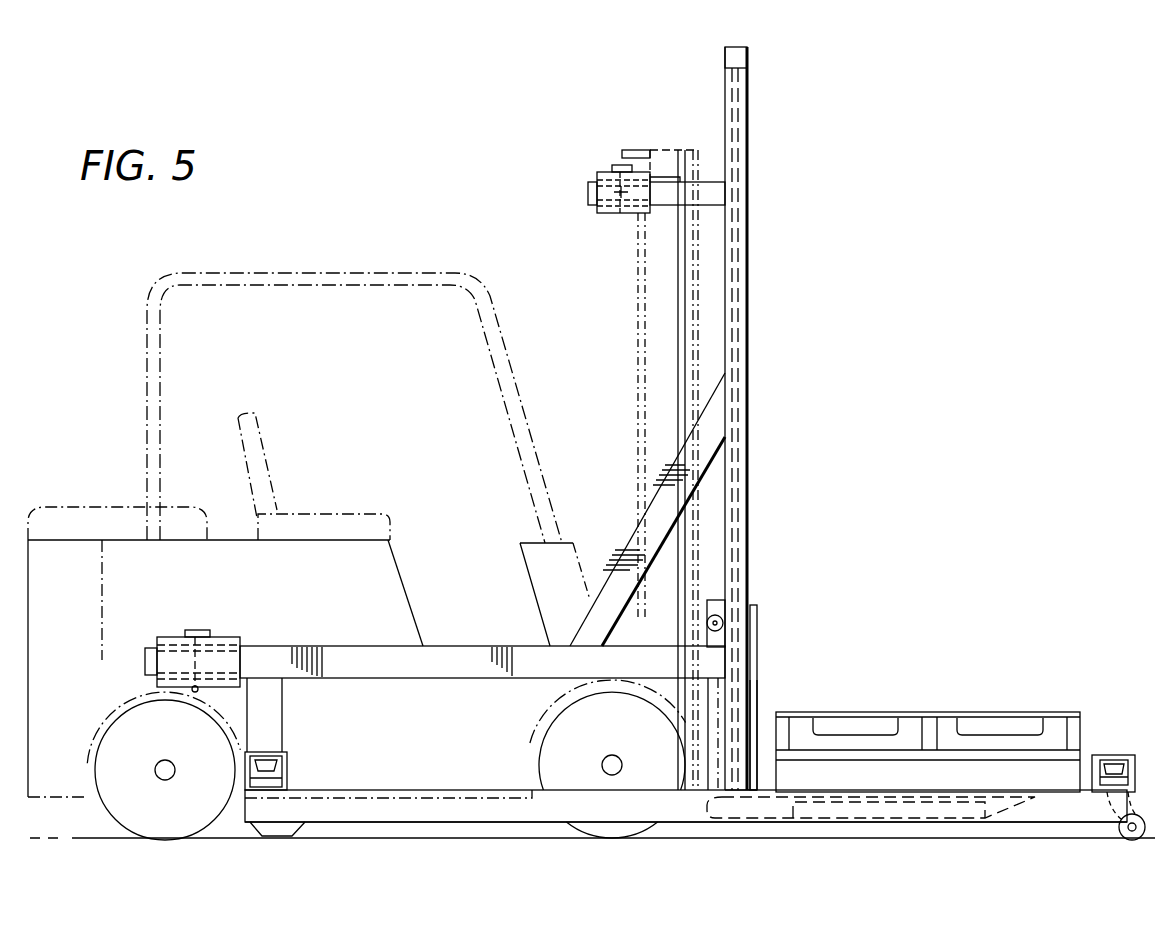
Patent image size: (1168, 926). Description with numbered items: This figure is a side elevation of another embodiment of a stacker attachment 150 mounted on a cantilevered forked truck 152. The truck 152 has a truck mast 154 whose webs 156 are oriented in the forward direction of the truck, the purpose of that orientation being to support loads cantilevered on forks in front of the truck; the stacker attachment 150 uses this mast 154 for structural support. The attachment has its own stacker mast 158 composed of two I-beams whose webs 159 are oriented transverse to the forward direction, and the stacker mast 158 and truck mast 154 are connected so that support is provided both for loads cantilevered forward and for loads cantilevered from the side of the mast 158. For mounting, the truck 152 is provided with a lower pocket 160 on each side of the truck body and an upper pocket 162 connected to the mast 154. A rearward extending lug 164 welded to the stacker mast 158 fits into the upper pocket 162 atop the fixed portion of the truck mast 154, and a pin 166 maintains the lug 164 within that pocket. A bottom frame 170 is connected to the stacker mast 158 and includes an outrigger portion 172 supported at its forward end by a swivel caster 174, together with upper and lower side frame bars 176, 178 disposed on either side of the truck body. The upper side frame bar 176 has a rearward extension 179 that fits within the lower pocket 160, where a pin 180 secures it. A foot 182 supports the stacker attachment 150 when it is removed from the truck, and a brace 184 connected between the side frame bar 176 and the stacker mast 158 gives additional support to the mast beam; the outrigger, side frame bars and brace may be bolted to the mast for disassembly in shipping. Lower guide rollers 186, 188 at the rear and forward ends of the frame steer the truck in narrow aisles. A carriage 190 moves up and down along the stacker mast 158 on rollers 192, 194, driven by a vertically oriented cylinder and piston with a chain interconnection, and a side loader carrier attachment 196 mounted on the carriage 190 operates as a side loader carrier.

The stacker attachment 150 is at (804, 618).
The cantilevered forked truck 152 is at (208, 486).
The truck mast 154 is at (633, 432).
The webs of truck mast 156 is at (656, 328).
The stacker mast 158 is at (749, 405).
The webs of stacker mast 159 is at (749, 330).
The lower pocket 160 is at (222, 641).
The upper pocket 162 is at (597, 180).
The rearward extending lug 164 is at (707, 182).
The pin 166 is at (616, 166).
The bottom frame 170 is at (727, 826).
The outrigger portion 172 is at (882, 823).
The swivel caster 174 is at (1152, 836).
The upper side frame bar 176 is at (457, 660).
The lower side frame bar 178 is at (473, 815).
The rearward extension 179 is at (148, 650).
The pin 180 is at (200, 630).
The foot 182 is at (300, 838).
The brace 184 is at (632, 537).
The lower guide roller 186 is at (270, 770).
The lower guide roller 188 is at (1107, 764).
The carriage 190 is at (758, 684).
The roller 192 is at (718, 613).
The roller 194 is at (757, 604).
The side loader carrier attachment 196 is at (912, 717).